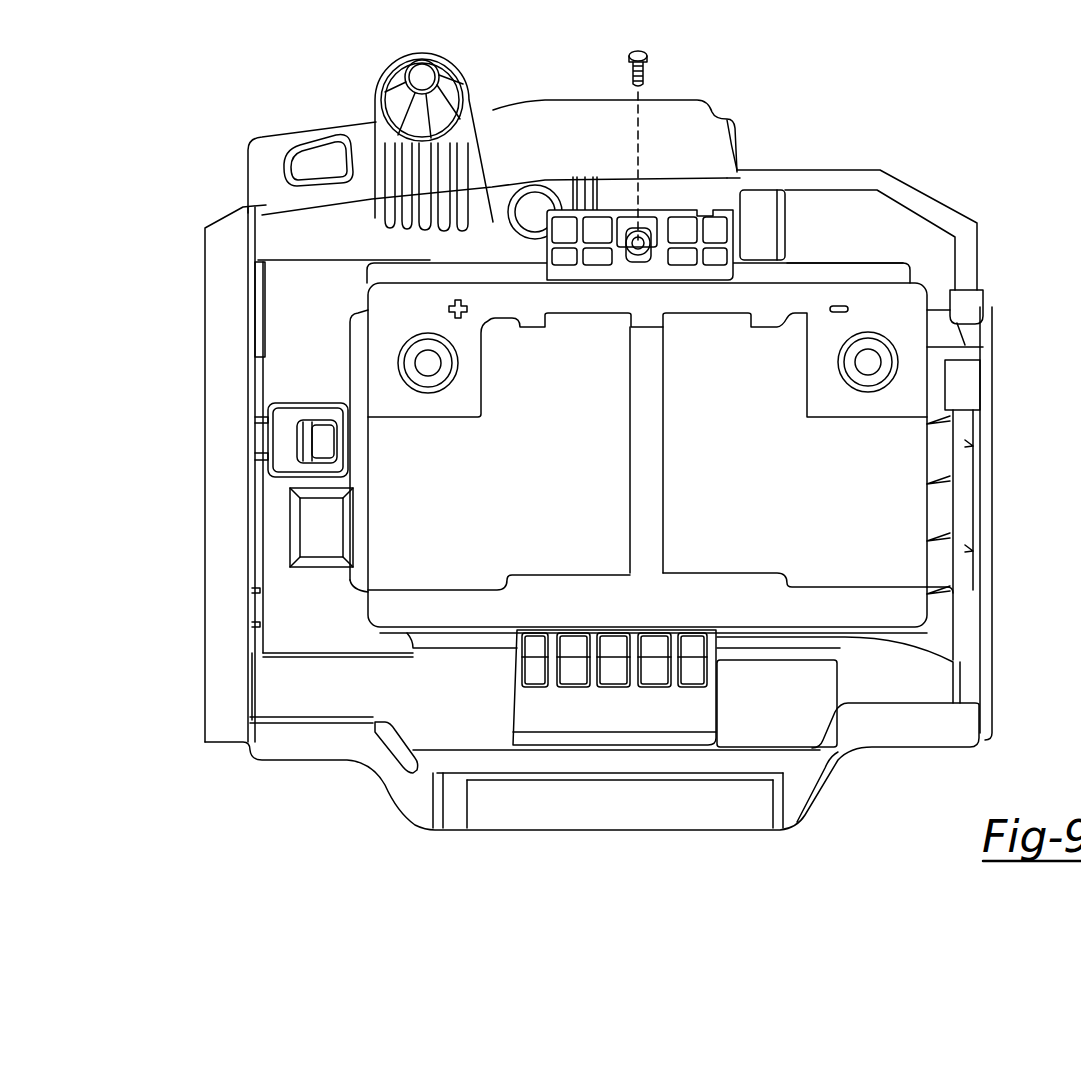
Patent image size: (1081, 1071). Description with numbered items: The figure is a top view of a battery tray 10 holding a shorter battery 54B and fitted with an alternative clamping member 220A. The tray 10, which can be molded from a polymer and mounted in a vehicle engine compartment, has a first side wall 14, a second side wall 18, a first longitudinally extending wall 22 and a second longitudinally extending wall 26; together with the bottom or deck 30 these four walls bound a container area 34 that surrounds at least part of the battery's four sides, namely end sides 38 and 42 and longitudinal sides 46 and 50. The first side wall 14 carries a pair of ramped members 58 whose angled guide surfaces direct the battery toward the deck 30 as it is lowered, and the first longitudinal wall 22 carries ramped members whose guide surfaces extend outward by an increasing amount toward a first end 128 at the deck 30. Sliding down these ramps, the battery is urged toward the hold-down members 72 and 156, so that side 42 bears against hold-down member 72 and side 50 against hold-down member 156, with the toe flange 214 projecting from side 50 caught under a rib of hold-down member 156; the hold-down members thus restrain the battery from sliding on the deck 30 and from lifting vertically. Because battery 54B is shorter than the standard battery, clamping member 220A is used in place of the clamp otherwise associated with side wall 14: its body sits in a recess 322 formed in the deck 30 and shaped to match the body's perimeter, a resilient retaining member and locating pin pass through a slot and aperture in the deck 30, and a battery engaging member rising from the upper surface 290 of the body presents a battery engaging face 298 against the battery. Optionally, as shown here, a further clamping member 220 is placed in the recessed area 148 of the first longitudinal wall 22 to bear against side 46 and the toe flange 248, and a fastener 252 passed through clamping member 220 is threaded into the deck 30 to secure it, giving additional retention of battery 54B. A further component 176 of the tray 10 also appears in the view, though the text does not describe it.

The battery tray 10 is at (886, 160).
The first side wall 14 is at (270, 213).
The second side wall 18 is at (960, 330).
The first longitudinally extending wall 22 is at (740, 175).
The second longitudinally extending wall 26 is at (913, 703).
The deck 30 is at (343, 320).
The container area 34 is at (288, 619).
The battery side 38 is at (373, 522).
The battery side 42 is at (927, 392).
The battery longitudinal side 46 is at (536, 290).
The battery longitudinal side 50 is at (847, 587).
The battery 54B is at (755, 536).
The ramped members 58 is at (262, 305).
The battery hold-down member 72 is at (938, 412).
The first end 128 is at (866, 262).
The recessed area 148 is at (618, 194).
The battery hold-down member 156 is at (720, 692).
The latch 176 is at (442, 738).
The toe flange 214 is at (463, 640).
The clamping member 220 is at (660, 208).
The alternative clamping member 220A is at (290, 400).
The toe flange 248 is at (905, 272).
The fastener 252 is at (652, 62).
The upper surface 290 is at (283, 450).
The battery engaging face 298 is at (347, 456).
The recess 322 is at (310, 403).